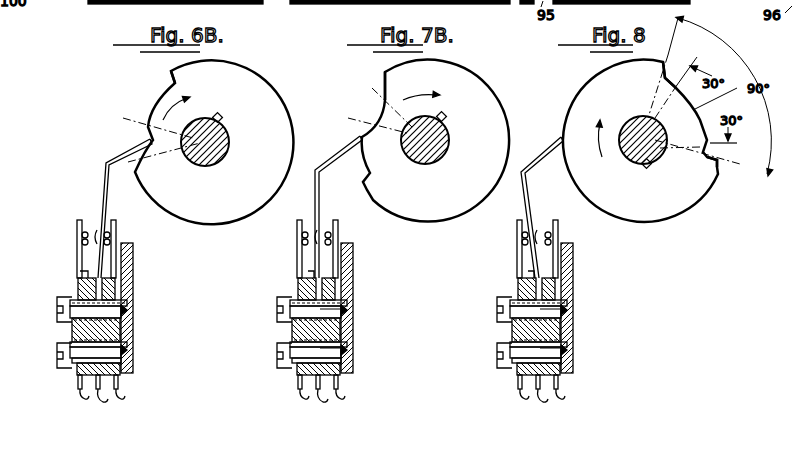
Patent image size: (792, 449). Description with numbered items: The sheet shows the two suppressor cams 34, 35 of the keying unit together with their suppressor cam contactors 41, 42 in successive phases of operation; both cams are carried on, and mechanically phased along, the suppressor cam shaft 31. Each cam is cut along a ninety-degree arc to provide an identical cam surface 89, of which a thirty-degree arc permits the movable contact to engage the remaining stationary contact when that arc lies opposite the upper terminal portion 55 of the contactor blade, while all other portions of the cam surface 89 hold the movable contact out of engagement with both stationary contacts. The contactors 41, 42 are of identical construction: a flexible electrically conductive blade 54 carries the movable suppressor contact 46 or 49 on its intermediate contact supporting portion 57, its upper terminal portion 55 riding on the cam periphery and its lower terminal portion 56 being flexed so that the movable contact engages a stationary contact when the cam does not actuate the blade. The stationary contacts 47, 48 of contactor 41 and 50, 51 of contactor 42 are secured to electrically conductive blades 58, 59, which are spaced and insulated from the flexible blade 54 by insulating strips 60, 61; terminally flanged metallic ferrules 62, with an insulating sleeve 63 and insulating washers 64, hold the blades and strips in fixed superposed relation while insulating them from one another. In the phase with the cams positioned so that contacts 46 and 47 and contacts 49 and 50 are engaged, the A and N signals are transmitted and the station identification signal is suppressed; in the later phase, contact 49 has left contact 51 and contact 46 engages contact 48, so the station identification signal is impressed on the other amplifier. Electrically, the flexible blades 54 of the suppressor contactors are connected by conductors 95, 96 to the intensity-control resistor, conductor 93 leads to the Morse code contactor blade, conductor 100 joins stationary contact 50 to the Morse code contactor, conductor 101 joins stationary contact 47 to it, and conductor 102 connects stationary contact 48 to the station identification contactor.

In FIG. 6B, the suppressor cam shaft 31 is at (229, 138).
In FIG. 7B, the suppressor cam shaft 31 is at (448, 129).
In FIG. 8, the suppressor cam shaft 31 is at (635, 158).
In FIG. 6B, the suppressor cam 34 is at (256, 73).
In FIG. 8, the suppressor cam 34 is at (720, 154).
In FIG. 7B, the suppressor cam 35 is at (471, 73).
In FIG. 8, the suppressor cam 35 is at (695, 207).
In FIG. 6B, the suppressor cam contactor 41 is at (80, 271).
In FIG. 7B, the suppressor cam contactor 42 is at (287, 272).
In FIG. 8, the suppressor cam contactor 42 is at (508, 272).
In FIG. 6B, the movable suppressor contact 46 is at (97, 232).
In FIG. 6B, the stationary contact 47 is at (77, 231).
In FIG. 6B, the stationary contact 48 is at (117, 233).
In FIG. 7B, the movable suppressor contact 49 is at (328, 222).
In FIG. 8, the movable suppressor contact 49 is at (545, 222).
In FIG. 7B, the stationary contact 50 is at (288, 249).
In FIG. 8, the stationary contact 50 is at (505, 249).
In FIG. 7B, the stationary contact 51 is at (345, 249).
In FIG. 8, the stationary contact 51 is at (566, 249).
In FIG. 6B, the flexible electrically conductive blade 54 is at (104, 189).
In FIG. 7B, the flexible electrically conductive blade 54 is at (315, 192).
In FIG. 8, the flexible electrically conductive blade 54 is at (522, 191).
In FIG. 6B, the upper terminal portion 55 is at (128, 150).
In FIG. 7B, the upper terminal portion 55 is at (333, 158).
In FIG. 8, the upper terminal portion 55 is at (562, 144).
In FIG. 6B, the lower terminal portion 56 is at (120, 293).
In FIG. 7B, the lower terminal portion 56 is at (337, 291).
In FIG. 8, the lower terminal portion 56 is at (556, 291).
In FIG. 6B, the intermediate contact supporting portion 57 is at (107, 202).
In FIG. 7B, the intermediate contact supporting portion 57 is at (320, 183).
In FIG. 8, the intermediate contact supporting portion 57 is at (530, 183).
In FIG. 6B, the electrically conductive blade 58 is at (78, 258).
In FIG. 7B, the electrically conductive blade 58 is at (278, 254).
In FIG. 8, the electrically conductive blade 58 is at (500, 254).
In FIG. 6B, the electrically conductive blade 59 is at (134, 259).
In FIG. 7B, the electrically conductive blade 59 is at (363, 308).
In FIG. 8, the electrically conductive blade 59 is at (581, 308).
In FIG. 6B, the insulating strip 60 is at (70, 331).
In FIG. 8, the insulating strip 60 is at (496, 326).
In FIG. 6B, the insulating strip 61 is at (134, 329).
In FIG. 8, the insulating strip 61 is at (560, 332).
In FIG. 7B, the metallic ferrule 62 is at (353, 328).
In FIG. 8, the metallic ferrule 62 is at (572, 327).
In FIG. 7B, the insulating sleeve 63 is at (300, 333).
In FIG. 7B, the insulating washer 64 is at (279, 332).
In FIG. 6B, the cam surface 89 is at (168, 85).
In FIG. 7B, the cam surface 89 is at (384, 77).
In FIG. 8, the cam surface 89 is at (663, 73).
In FIG. 6B, the conductor 93 is at (106, 4).
In FIG. 6B, the conductor 95 is at (110, 407).
In FIG. 7B, the conductor 96 is at (348, 394).
In FIG. 8, the conductor 96 is at (567, 394).
In FIG. 7B, the conductor 100 is at (284, 390).
In FIG. 8, the conductor 100 is at (503, 390).
In FIG. 6B, the conductor 101 is at (83, 399).
In FIG. 6B, the conductor 102 is at (128, 390).
In FIG. 7B, the conductor 102 is at (360, 387).
In FIG. 8, the conductor 102 is at (579, 387).